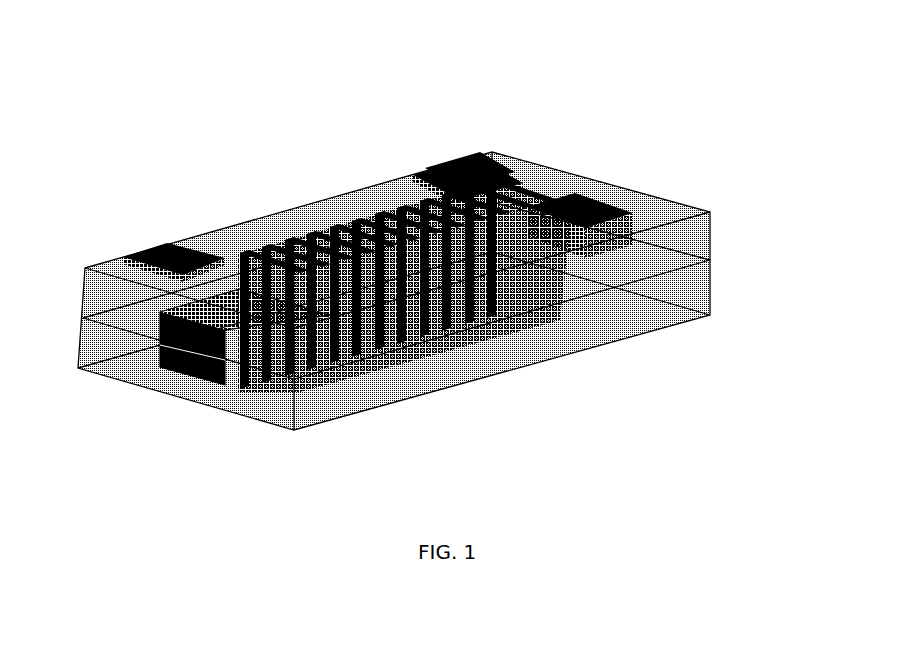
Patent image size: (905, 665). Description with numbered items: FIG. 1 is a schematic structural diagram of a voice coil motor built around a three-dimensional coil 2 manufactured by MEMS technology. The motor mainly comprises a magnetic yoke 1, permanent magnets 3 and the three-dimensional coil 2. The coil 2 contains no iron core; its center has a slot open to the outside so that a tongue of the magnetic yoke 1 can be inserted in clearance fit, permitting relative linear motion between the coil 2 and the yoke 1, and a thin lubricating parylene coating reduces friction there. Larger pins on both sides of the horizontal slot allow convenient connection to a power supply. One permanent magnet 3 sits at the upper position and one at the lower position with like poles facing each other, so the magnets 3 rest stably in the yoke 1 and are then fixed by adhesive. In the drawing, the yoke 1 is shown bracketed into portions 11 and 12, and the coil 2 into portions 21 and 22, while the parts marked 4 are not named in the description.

The magnetic yoke 1 is at (841, 174).
The upper housing layer 11 is at (655, 257).
The lower housing layer 12 is at (657, 303).
The three-dimensional coil 2 is at (63, 425).
The upper base layer 21 is at (195, 338).
The lower base layer 22 is at (208, 365).
The permanent magnets 3 is at (493, 165).
The electrode pads 4 is at (323, 155).